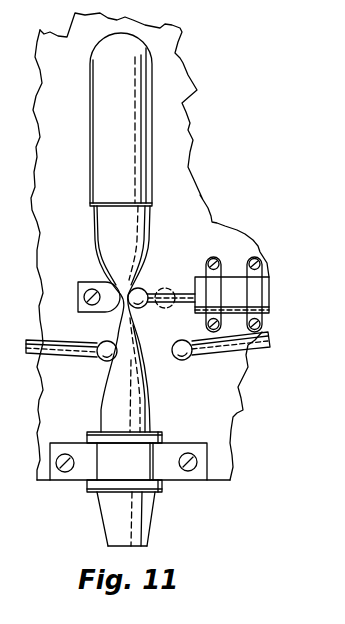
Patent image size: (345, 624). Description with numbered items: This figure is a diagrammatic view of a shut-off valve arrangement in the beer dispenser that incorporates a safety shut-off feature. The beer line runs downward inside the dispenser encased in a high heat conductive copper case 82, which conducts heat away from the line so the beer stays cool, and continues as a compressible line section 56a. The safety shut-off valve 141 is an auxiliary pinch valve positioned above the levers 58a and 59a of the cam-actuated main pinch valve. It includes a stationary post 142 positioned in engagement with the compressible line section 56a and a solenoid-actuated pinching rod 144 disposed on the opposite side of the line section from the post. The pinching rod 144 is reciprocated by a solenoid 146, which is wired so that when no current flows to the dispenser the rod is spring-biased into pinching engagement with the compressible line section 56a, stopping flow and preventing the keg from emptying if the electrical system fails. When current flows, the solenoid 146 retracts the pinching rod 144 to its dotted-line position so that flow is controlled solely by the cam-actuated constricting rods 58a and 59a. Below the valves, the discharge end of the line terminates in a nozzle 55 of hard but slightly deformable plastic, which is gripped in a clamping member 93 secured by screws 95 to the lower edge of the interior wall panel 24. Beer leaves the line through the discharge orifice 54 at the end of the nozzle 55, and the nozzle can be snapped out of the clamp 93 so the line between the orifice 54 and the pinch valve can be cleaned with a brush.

The interior wall 24 is at (183, 146).
The copper case 82 is at (98, 112).
The compressible line section 56a is at (150, 228).
The safety shut-off valve 141 is at (204, 249).
The stationary post 142 is at (93, 282).
The pinching rod 144 is at (143, 289).
The solenoid 146 is at (270, 292).
The lever 58a is at (59, 357).
The lever 59a is at (209, 360).
The clamping member 93 is at (173, 474).
The screw 95 is at (57, 462).
The nozzle 55 is at (110, 513).
The discharge orifice 54 is at (128, 546).